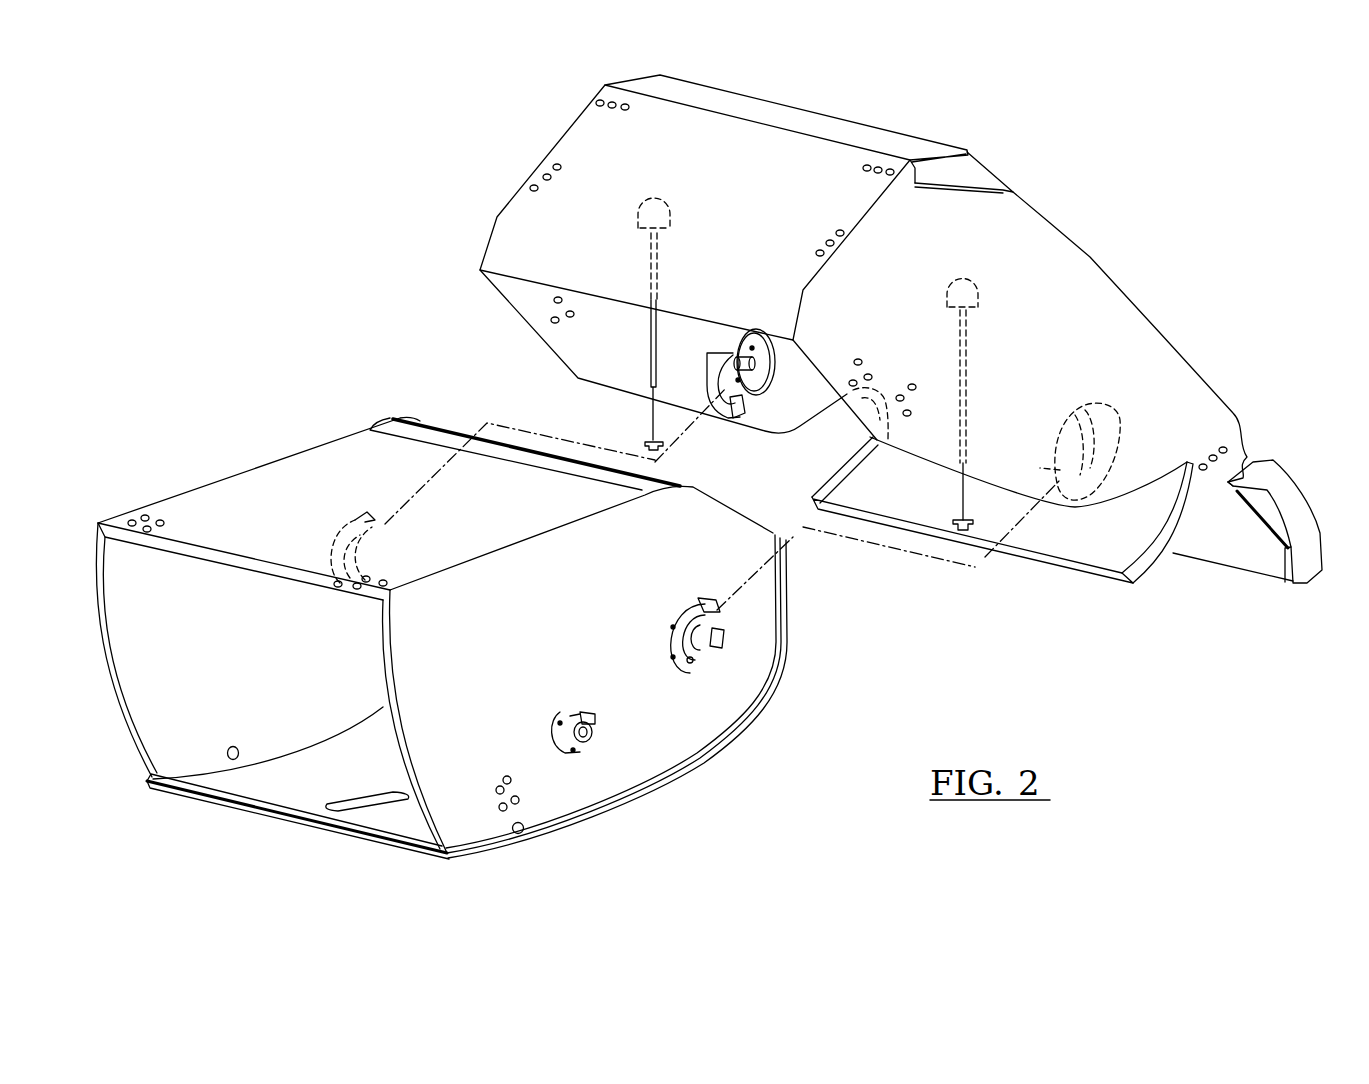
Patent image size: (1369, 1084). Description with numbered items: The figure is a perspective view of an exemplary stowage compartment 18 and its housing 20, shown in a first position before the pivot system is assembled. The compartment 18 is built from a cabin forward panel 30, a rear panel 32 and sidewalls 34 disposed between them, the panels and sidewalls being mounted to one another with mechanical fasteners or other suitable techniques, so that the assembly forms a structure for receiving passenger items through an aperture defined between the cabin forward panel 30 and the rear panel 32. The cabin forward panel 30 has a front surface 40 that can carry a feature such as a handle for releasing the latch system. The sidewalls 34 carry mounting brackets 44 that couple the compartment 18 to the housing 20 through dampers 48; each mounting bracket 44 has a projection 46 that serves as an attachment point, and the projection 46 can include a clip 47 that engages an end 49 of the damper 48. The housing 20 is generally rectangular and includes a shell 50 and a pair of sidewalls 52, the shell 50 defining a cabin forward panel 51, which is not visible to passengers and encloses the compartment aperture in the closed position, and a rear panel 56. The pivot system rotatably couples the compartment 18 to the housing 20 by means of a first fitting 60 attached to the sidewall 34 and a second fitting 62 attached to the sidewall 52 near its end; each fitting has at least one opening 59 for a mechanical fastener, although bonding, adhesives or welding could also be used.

The compartment 18 is at (150, 487).
The housing 20 is at (1068, 237).
The cabin forward panel 30 is at (452, 868).
The rear panel 32 is at (272, 470).
The sidewalls 34 is at (163, 732).
The front surface 40 is at (333, 835).
The mounting brackets 44 is at (580, 760).
The projection 46 is at (593, 732).
The clip 47 is at (573, 713).
The damper 48 is at (650, 423).
The end 49 is at (667, 448).
The shell 50 is at (820, 107).
The cabin forward panel 51 is at (682, 140).
The sidewalls 52 is at (535, 300).
The rear panel 56 is at (977, 167).
The opening 59 is at (573, 750).
The first fitting 60 is at (350, 522).
The second fitting 62 is at (760, 402).